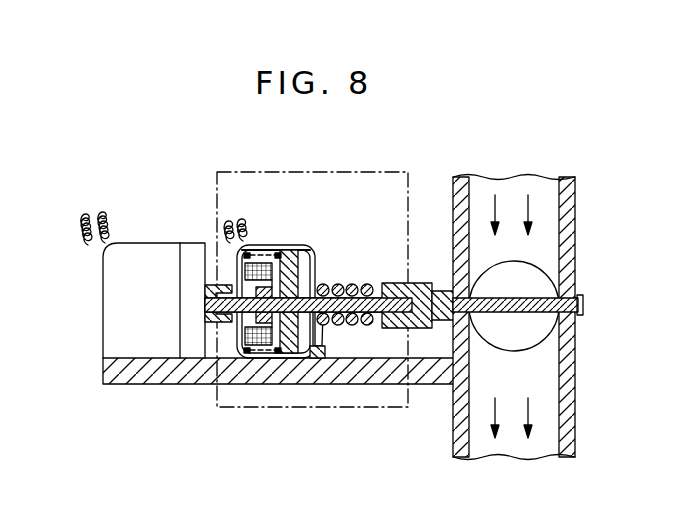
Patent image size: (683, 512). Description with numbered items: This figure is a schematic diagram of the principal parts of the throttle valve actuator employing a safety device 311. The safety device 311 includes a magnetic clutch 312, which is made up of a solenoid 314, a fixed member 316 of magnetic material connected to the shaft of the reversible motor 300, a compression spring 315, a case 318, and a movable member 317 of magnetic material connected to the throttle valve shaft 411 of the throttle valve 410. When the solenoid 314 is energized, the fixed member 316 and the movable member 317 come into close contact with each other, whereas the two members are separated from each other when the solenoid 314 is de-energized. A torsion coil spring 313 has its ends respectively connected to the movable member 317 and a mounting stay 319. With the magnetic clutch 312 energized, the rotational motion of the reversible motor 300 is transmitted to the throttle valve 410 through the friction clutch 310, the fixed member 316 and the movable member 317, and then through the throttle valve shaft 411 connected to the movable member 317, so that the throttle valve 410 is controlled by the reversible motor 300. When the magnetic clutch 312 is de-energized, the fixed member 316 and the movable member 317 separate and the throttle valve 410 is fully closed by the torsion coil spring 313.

The reversible motor 300 is at (172, 243).
The friction clutch 310 is at (190, 242).
The safety device 311 is at (308, 172).
The magnetic clutch 312 is at (263, 243).
The torsion coil spring 313 is at (352, 283).
The solenoid 314 is at (272, 347).
The compression spring 315 is at (252, 354).
The fixed member 316 is at (223, 317).
The movable member 317 is at (305, 247).
The case 318 is at (317, 273).
The mounting stay 319 is at (103, 374).
The throttle valve 410 is at (537, 278).
The throttle valve shaft 411 is at (430, 283).